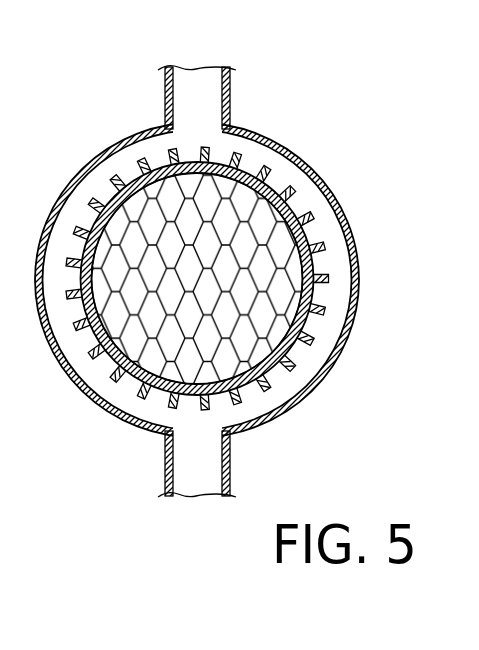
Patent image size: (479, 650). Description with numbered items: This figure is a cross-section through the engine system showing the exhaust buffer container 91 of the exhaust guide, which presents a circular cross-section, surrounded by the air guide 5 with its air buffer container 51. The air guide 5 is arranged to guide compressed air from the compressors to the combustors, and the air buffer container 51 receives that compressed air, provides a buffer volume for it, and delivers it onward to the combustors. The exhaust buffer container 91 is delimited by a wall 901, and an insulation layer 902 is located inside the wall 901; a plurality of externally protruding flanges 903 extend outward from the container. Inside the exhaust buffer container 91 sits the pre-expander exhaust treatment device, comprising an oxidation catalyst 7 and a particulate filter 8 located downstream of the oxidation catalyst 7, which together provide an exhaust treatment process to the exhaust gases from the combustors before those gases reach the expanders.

The air guide 5 is at (230, 98).
The air buffer container 51 is at (305, 157).
The externally protruding flanges 903 is at (296, 193).
The exhaust buffer container 91 is at (318, 262).
The wall 901 is at (320, 298).
The insulation layer 902 is at (320, 330).
The oxidation catalyst 7 is at (233, 337).
The particulate filter 8 is at (188, 308).